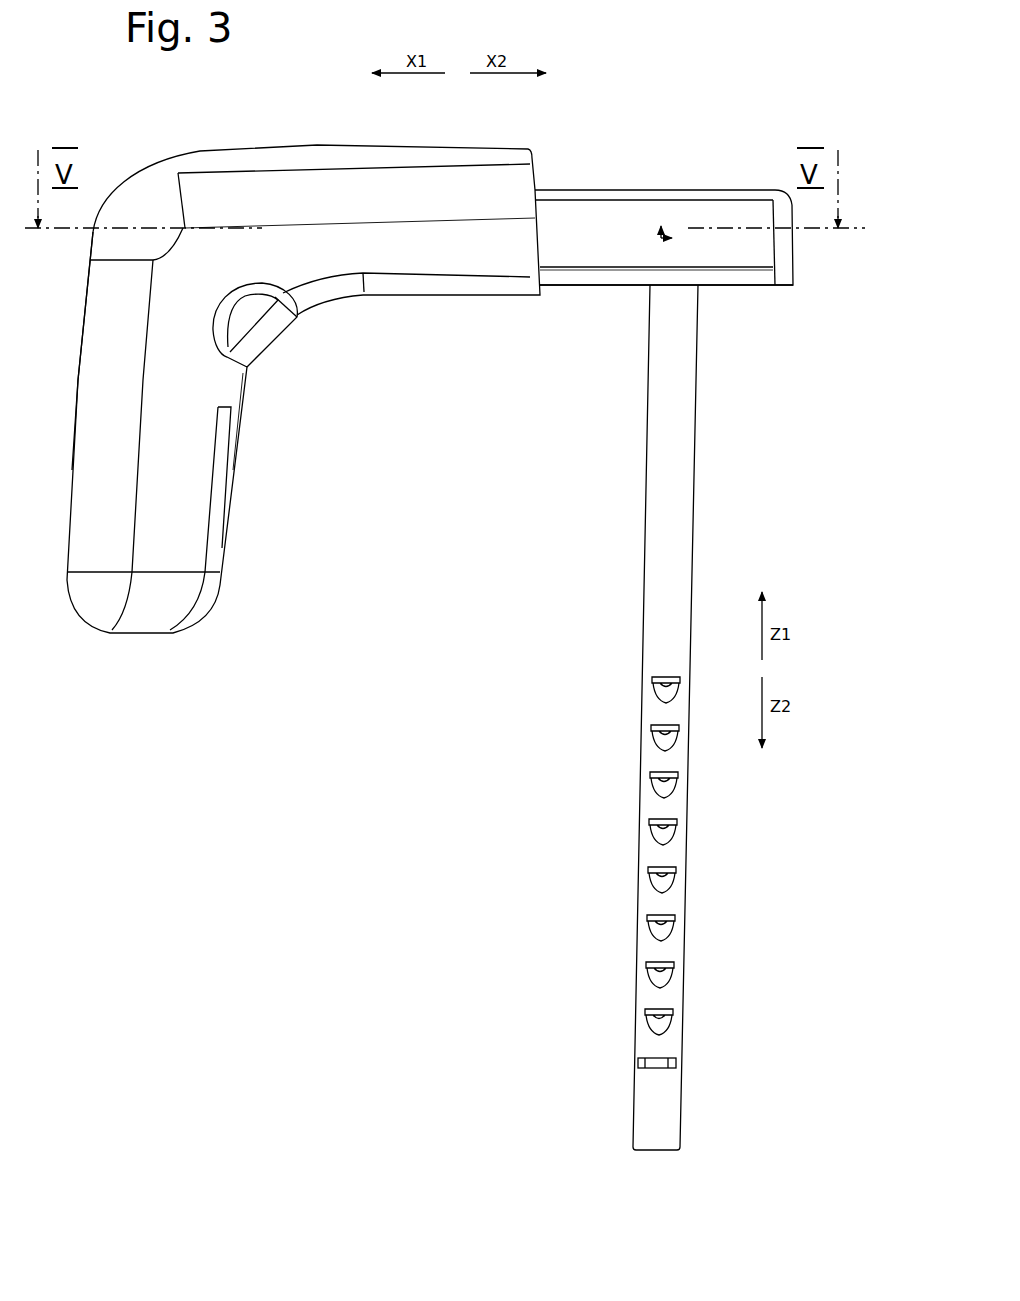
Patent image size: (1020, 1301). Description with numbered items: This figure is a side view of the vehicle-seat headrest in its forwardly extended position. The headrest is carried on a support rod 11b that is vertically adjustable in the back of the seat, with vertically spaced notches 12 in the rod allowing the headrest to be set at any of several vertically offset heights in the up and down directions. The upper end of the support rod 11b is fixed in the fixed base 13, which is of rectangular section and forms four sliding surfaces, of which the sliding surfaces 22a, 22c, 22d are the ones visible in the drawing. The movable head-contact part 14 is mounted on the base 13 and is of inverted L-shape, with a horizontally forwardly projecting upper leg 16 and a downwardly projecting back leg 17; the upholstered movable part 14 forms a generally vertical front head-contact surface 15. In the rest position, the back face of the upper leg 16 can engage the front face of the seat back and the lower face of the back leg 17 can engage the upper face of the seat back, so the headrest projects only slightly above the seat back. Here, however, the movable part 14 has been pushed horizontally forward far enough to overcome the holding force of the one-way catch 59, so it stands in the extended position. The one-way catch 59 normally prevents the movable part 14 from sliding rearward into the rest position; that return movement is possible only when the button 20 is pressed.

The support rod 11b is at (670, 478).
The notches 12 is at (655, 785).
The base 13 is at (572, 217).
The movable head-contact part 14 is at (108, 530).
The front head-contact surface 15 is at (76, 388).
The upper leg 16 is at (204, 508).
The back leg 17 is at (433, 257).
The button 20 is at (260, 338).
The sliding surface 22a is at (660, 190).
The sliding surface 22c is at (627, 290).
The sliding surface 22d is at (618, 252).
The one-way catch 59 is at (300, 340).